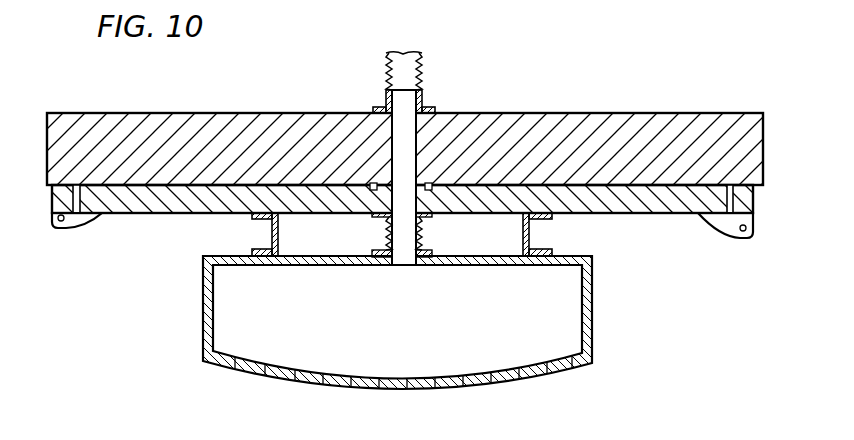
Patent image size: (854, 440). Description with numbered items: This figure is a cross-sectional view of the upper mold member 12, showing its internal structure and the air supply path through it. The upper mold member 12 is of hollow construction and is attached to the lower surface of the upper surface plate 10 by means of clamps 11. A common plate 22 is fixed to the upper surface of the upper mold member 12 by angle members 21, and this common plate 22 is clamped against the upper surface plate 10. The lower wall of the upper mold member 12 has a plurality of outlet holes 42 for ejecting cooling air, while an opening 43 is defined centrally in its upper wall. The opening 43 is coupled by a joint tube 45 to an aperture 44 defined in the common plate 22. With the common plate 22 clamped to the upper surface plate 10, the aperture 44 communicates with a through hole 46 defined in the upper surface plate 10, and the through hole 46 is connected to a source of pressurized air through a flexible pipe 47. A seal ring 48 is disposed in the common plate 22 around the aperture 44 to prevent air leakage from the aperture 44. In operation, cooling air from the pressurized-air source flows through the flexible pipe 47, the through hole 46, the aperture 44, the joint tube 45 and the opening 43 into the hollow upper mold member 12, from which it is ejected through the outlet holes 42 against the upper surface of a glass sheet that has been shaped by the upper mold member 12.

The upper surface plate 10 is at (190, 127).
The clamps 11 is at (79, 225).
The upper mold member 12 is at (592, 302).
The angle members 21 is at (272, 232).
The common plate 22 is at (145, 205).
The outlet holes 42 is at (237, 368).
The opening 43 is at (402, 265).
The aperture 44 is at (395, 193).
The joint tube 45 is at (422, 235).
The through hole 46 is at (416, 134).
The flexible pipe 47 is at (386, 66).
The seal ring 48 is at (373, 187).